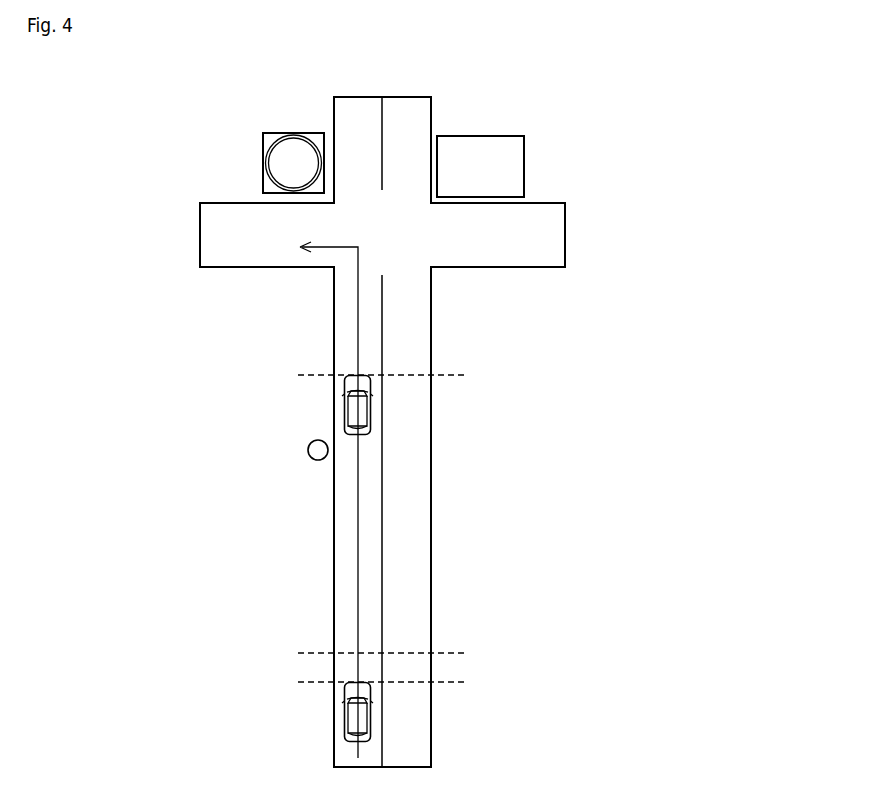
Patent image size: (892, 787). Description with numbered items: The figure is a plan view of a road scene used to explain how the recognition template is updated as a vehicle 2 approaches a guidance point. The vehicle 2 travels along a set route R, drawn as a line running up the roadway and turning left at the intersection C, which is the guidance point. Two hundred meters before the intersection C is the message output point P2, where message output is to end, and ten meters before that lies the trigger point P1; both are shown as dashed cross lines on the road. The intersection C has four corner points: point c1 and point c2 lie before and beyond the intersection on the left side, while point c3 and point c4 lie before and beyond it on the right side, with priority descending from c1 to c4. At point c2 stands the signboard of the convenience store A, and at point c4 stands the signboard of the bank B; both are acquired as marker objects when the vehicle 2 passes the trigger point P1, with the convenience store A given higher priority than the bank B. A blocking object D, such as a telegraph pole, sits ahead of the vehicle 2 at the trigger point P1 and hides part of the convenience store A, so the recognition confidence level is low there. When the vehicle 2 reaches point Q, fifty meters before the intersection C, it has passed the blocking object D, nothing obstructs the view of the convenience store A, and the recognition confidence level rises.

The vehicle 2 is at (344, 410).
The convenience store A is at (273, 133).
The bank B is at (480, 166).
The intersection C is at (384, 238).
The blocking object D is at (308, 450).
The route R is at (357, 535).
The point Q is at (425, 375).
The trigger point P1 is at (475, 682).
The message output point P2 is at (526, 654).
The point c1 is at (322, 280).
The point c2 is at (324, 216).
The point c3 is at (443, 280).
The point c4 is at (440, 216).